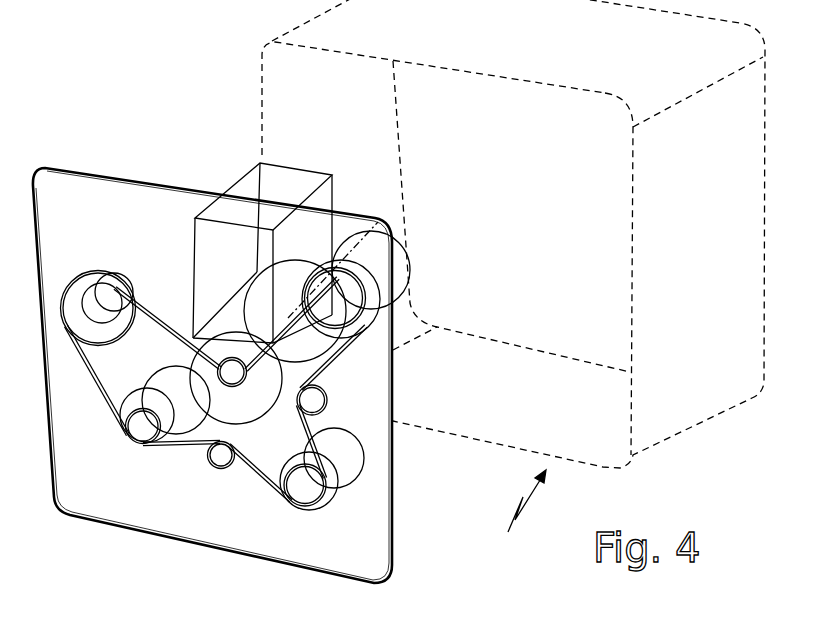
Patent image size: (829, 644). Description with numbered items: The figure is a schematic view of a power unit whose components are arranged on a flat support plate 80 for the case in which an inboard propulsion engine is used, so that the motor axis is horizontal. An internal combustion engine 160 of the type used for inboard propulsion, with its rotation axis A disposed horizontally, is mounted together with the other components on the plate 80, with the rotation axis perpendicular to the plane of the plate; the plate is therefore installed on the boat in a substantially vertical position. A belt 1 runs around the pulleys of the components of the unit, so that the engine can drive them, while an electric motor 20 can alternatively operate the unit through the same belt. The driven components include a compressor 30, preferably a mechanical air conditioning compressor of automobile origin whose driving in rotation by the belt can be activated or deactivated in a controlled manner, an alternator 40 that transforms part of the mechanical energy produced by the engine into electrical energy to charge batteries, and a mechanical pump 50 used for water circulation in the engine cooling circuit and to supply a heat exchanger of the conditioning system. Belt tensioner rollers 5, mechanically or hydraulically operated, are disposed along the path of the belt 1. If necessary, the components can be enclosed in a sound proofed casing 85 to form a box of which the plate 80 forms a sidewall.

The belt 1 is at (258, 475).
The belt tensioner rollers 5 is at (313, 400).
The electric motor 20 is at (400, 312).
The compressor 30 is at (348, 468).
The alternator 40 is at (163, 450).
The mechanical pump 50 is at (112, 288).
The plate 80 is at (327, 560).
The sound proofed casing 85 is at (521, 516).
The internal combustion engine 160 is at (247, 185).
The rotation axis A is at (273, 360).